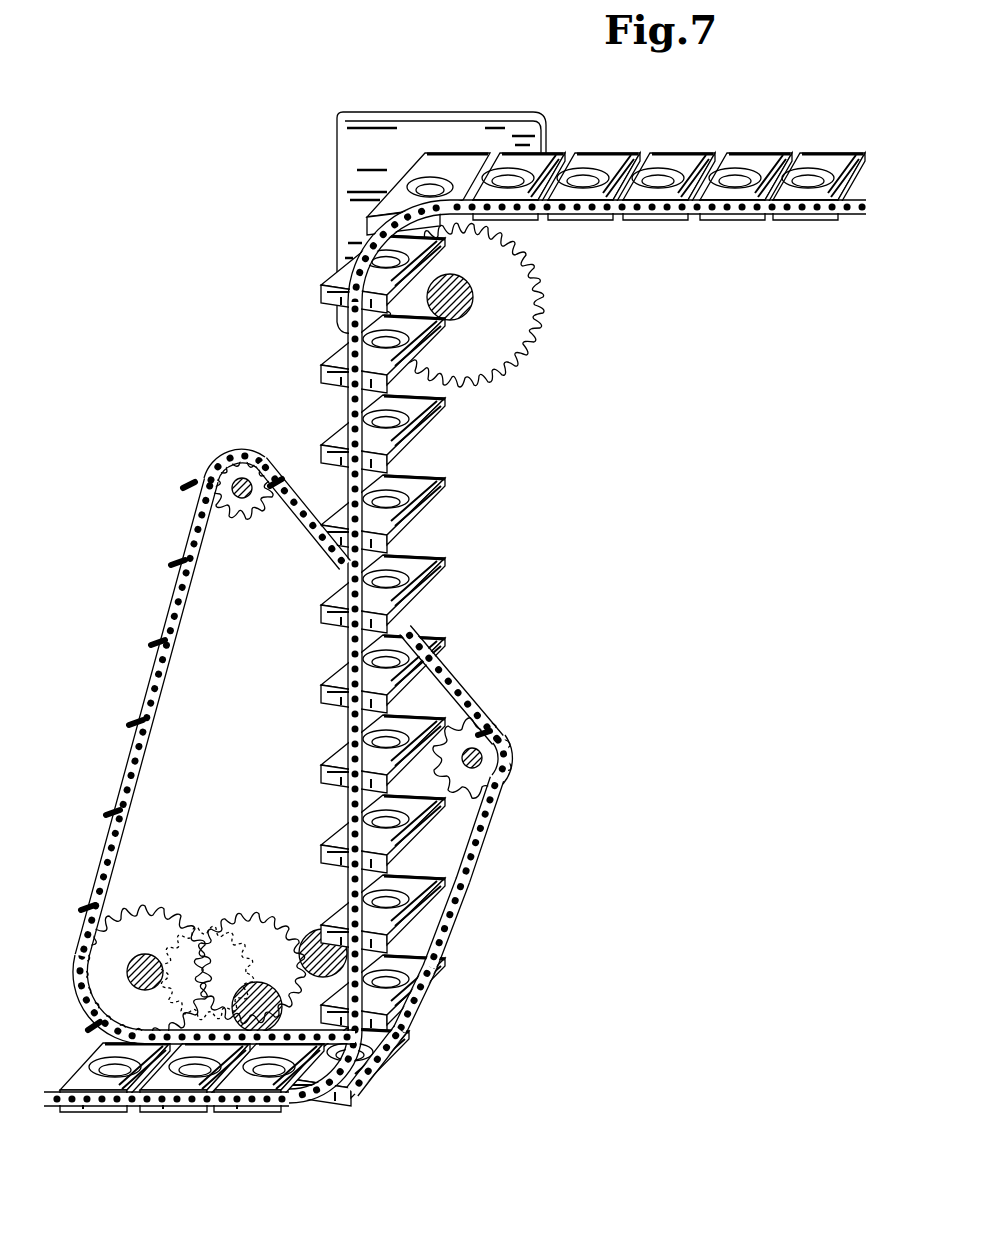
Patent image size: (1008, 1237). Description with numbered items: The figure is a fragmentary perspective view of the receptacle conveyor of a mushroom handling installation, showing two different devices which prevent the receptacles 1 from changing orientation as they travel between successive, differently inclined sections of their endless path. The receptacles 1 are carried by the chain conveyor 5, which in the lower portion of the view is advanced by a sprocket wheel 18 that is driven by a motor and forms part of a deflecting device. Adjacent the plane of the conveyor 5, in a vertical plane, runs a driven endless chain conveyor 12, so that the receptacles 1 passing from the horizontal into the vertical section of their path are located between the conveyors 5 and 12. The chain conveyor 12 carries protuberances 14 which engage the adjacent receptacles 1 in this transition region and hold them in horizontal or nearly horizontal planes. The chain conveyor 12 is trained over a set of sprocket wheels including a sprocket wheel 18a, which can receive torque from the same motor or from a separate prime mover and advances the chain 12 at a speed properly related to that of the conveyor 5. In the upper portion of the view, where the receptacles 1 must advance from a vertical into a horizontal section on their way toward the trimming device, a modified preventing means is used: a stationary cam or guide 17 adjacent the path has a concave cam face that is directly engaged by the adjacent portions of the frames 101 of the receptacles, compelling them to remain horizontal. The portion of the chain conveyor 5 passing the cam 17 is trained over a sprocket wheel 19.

The receptacle 1 is at (432, 612).
The chain conveyor 5 is at (352, 660).
The endless chain conveyor 12 is at (480, 692).
The protuberance 14 is at (463, 882).
The stationary cam 17 is at (357, 186).
The sprocket wheel 18 is at (240, 955).
The sprocket wheel 18a is at (302, 905).
The sprocket wheel 19 is at (520, 292).
The frame 101 is at (688, 162).